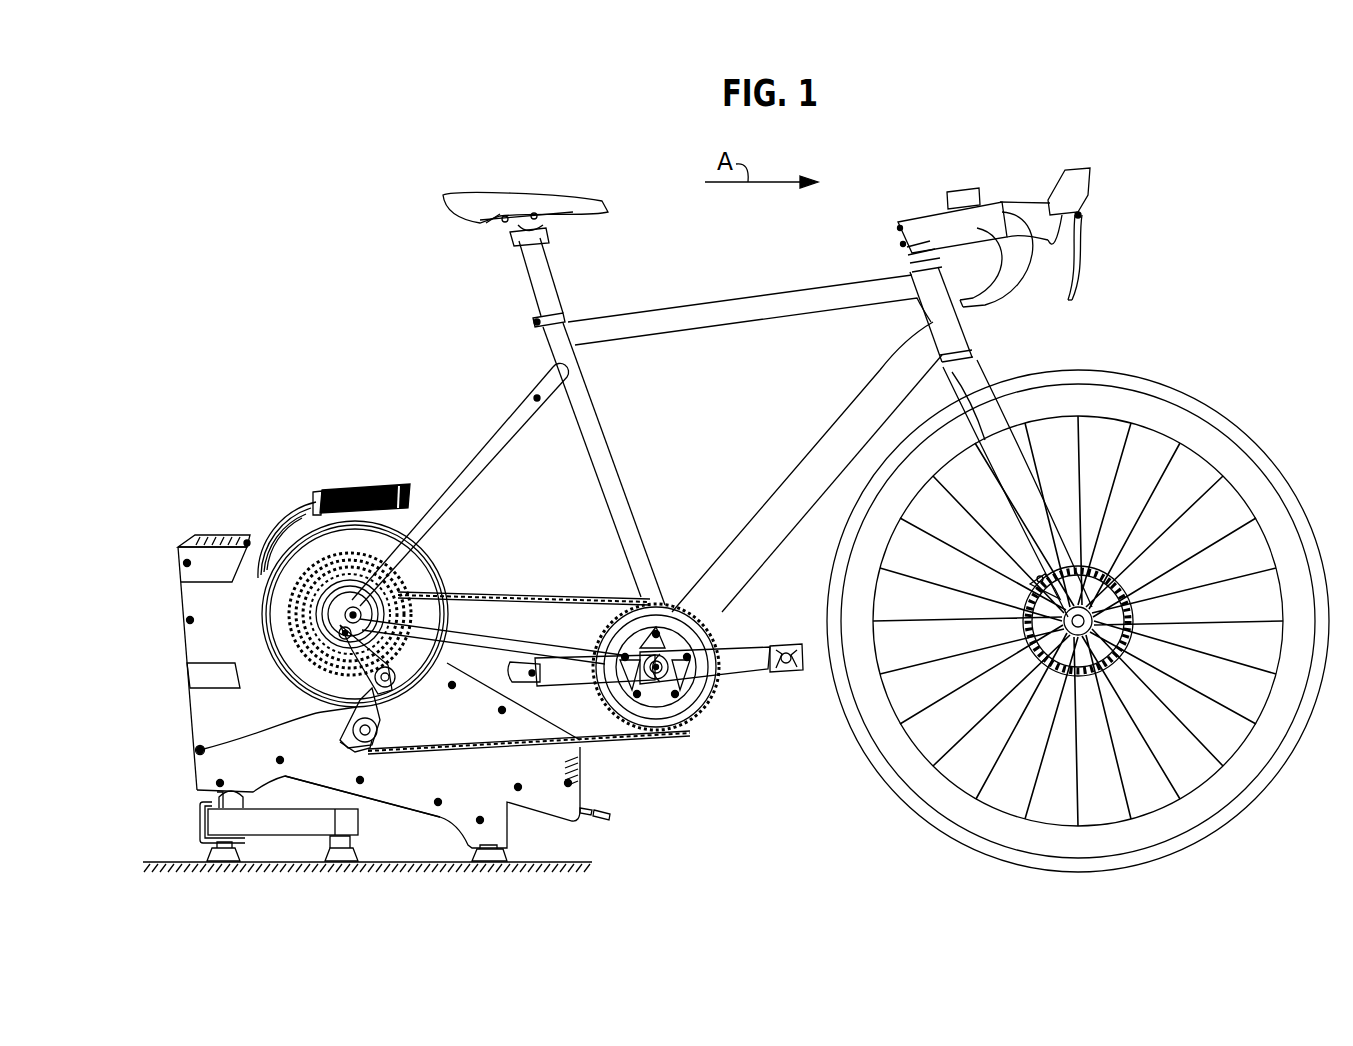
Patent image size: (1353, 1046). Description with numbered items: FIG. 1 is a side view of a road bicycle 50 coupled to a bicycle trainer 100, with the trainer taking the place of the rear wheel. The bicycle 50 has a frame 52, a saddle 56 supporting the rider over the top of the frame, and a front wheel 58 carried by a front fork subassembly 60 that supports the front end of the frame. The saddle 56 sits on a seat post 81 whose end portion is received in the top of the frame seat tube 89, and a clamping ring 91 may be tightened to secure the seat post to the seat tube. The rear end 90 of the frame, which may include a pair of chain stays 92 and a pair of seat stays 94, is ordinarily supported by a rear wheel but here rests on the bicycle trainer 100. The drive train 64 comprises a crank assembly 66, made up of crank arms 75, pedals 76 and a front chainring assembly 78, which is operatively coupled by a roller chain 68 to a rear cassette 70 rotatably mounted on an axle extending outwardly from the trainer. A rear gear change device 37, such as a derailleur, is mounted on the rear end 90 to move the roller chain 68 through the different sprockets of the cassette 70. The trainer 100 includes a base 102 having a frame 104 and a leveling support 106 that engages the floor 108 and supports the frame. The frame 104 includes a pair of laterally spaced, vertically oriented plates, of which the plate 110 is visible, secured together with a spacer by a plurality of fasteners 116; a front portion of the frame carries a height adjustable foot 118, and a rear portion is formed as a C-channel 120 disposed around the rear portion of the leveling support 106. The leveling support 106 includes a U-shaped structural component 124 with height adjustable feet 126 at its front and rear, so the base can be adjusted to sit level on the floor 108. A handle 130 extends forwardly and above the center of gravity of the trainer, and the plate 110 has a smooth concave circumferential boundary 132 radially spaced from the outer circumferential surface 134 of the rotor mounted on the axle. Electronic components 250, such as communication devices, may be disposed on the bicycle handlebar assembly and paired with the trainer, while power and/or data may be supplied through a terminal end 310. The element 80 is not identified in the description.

The rear gear change device 37 is at (196, 750).
The bicycle 50 is at (826, 260).
The frame 52 is at (740, 540).
The saddle 56 is at (530, 194).
The front wheel 58 is at (1277, 518).
The front fork subassembly 60 is at (1000, 433).
The drive train 64 is at (688, 739).
The crank assembly 66 is at (687, 664).
The roller chain 68 is at (597, 745).
The rear cassette 70 is at (330, 557).
The crank arms 75 is at (553, 660).
The pedals 76 is at (783, 675).
The front chainring assembly 78 is at (672, 615).
The bottom bracket axle 80 is at (660, 612).
The seat post 81 is at (548, 287).
The frame seat tube 89 is at (600, 437).
The rear end 90 is at (490, 445).
The clamping ring 91 is at (565, 318).
The chain stays 92 is at (497, 637).
The seat stays 94 is at (513, 438).
The bicycle trainer 100 is at (163, 650).
The base 102 is at (163, 706).
The frame 104 is at (555, 812).
The leveling support 106 is at (280, 832).
The floor 108 is at (162, 862).
The plate 110 is at (417, 797).
The fasteners 116 is at (188, 619).
The foot 118 is at (494, 866).
The C-channel 120 is at (200, 817).
The U-shaped structural component 124 is at (248, 826).
The height adjustable feet 126 is at (223, 866).
The handle 130 is at (381, 487).
The circumferential boundary 132 is at (270, 577).
The outer circumferential surface 134 is at (281, 557).
The electronic components 250 is at (963, 190).
The terminal end 310 is at (610, 819).